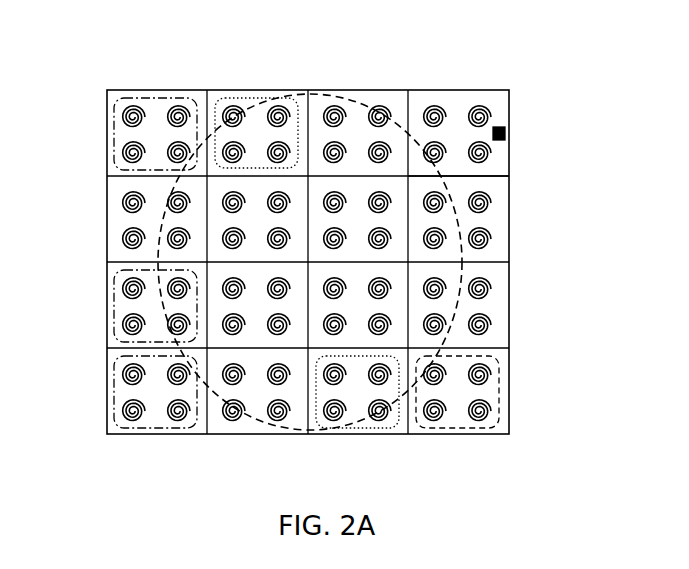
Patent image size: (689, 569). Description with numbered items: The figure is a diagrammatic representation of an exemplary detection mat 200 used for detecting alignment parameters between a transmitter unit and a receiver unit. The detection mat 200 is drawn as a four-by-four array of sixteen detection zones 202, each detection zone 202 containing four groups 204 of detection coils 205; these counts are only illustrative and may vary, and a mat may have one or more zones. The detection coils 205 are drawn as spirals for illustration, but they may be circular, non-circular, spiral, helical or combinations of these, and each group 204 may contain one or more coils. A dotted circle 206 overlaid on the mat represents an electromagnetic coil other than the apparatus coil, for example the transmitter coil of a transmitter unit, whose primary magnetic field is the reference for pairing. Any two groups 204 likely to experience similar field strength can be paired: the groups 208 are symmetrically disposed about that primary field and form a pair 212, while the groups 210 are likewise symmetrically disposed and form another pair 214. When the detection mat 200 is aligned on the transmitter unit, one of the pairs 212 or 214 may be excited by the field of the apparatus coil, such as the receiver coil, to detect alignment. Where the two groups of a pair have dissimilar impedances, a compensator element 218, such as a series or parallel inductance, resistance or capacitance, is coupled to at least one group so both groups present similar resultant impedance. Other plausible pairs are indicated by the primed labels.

The detection mat 200 is at (468, 36).
The detection zone 202 is at (108, 282).
The group of detection coils 204 is at (108, 365).
The detection coil 205 is at (489, 292).
The dotted circle 206 is at (510, 177).
The groups of detection coils (first paired groups) 208 is at (240, 98).
The groups of detection coils (second paired groups) 210 is at (150, 98).
The pair of groups of detection coils 212 is at (288, 100).
The pair of groups of detection coils 214 is at (108, 132).
The compensator element 218 is at (507, 133).